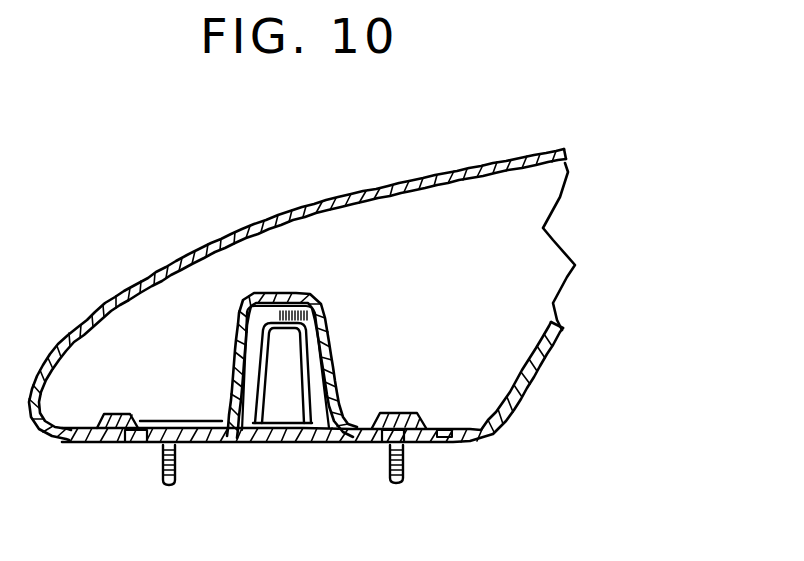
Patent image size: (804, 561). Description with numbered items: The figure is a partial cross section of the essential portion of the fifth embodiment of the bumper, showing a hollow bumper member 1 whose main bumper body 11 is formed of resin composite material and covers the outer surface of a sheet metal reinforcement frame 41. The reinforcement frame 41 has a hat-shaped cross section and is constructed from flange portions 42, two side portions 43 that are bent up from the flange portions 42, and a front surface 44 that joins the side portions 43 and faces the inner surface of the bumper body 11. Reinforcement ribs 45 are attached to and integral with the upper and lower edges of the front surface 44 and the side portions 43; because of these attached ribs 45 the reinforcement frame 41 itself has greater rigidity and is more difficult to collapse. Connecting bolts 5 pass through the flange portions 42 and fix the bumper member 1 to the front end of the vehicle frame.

The bumper member 1 is at (166, 260).
The main bumper body 11 is at (304, 203).
The reinforcement frame 41 is at (330, 440).
The flange portions 42 is at (213, 450).
The side portions 43 is at (238, 383).
The front surface 44 is at (270, 295).
The reinforcement ribs 45 is at (257, 348).
The connecting bolt 5 is at (161, 470).